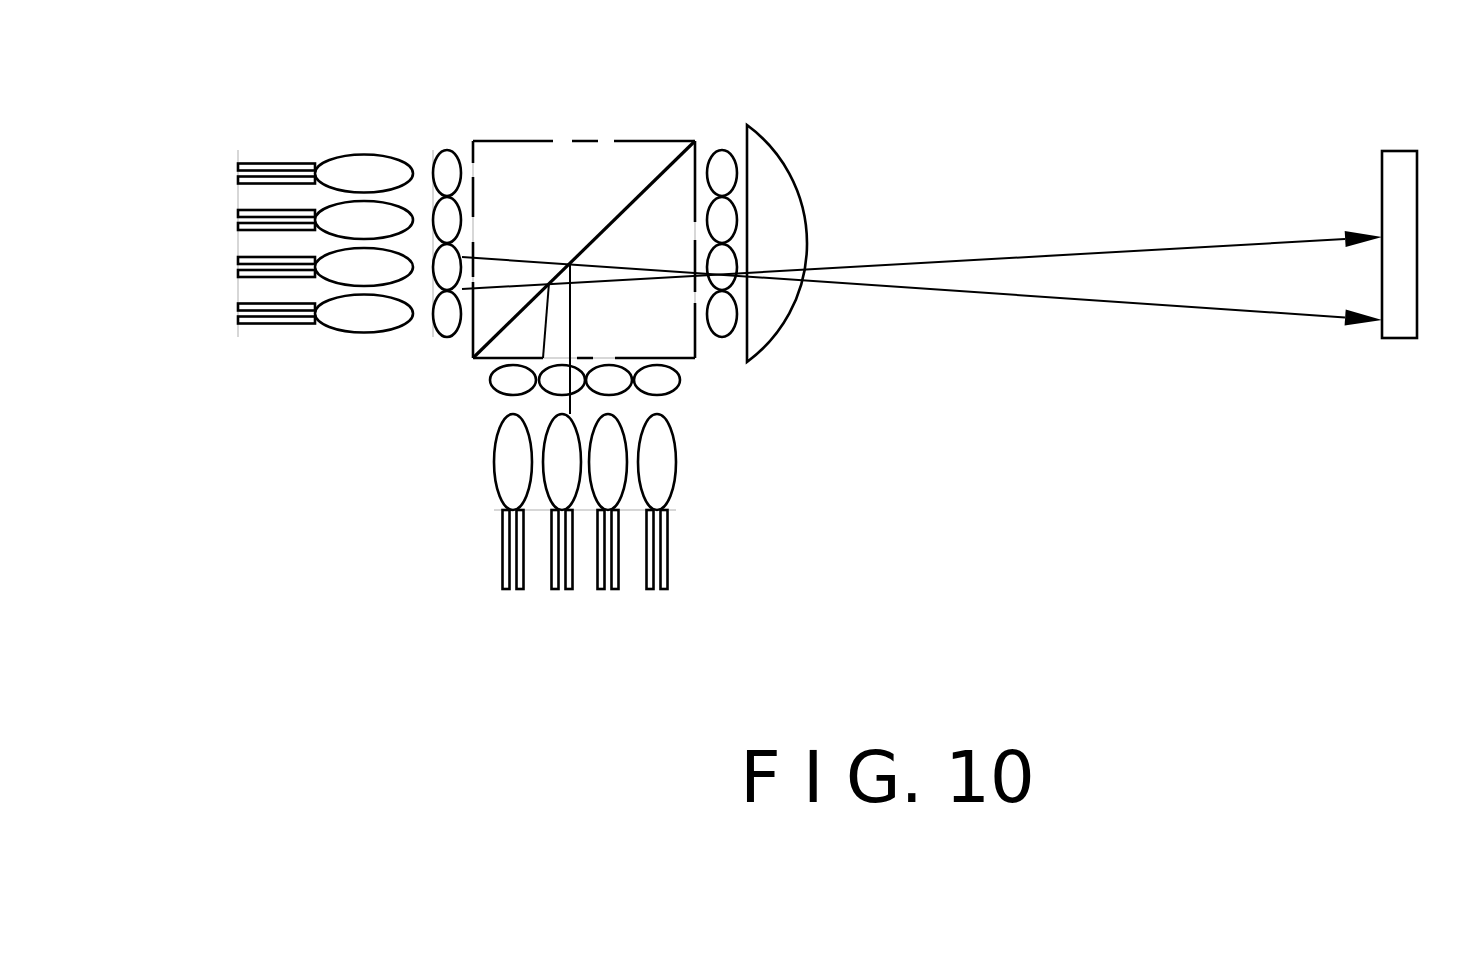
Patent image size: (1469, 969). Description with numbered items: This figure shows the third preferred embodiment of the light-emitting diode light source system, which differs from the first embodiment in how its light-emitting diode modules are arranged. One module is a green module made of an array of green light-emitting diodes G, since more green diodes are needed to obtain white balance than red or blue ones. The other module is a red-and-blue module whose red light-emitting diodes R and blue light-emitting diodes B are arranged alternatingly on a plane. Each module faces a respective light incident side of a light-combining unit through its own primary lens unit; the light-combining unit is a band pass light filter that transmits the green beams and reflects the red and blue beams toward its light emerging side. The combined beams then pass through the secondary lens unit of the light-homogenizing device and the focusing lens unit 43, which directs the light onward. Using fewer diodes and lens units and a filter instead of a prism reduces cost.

The focusing lens unit 43 is at (792, 233).
The green light-emitting diode G is at (273, 165).
The blue light-emitting diode B is at (505, 547).
The red light-emitting diode R is at (553, 547).